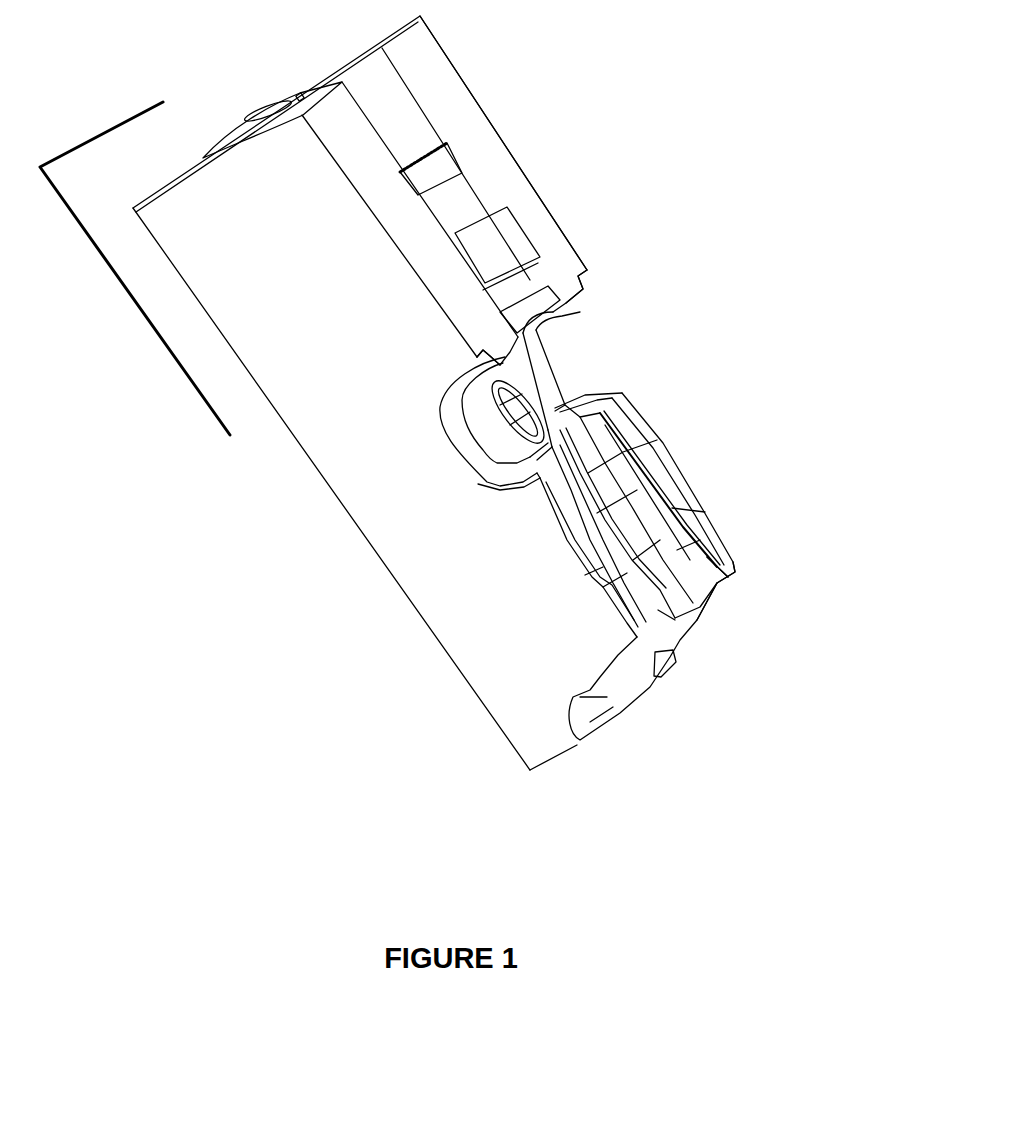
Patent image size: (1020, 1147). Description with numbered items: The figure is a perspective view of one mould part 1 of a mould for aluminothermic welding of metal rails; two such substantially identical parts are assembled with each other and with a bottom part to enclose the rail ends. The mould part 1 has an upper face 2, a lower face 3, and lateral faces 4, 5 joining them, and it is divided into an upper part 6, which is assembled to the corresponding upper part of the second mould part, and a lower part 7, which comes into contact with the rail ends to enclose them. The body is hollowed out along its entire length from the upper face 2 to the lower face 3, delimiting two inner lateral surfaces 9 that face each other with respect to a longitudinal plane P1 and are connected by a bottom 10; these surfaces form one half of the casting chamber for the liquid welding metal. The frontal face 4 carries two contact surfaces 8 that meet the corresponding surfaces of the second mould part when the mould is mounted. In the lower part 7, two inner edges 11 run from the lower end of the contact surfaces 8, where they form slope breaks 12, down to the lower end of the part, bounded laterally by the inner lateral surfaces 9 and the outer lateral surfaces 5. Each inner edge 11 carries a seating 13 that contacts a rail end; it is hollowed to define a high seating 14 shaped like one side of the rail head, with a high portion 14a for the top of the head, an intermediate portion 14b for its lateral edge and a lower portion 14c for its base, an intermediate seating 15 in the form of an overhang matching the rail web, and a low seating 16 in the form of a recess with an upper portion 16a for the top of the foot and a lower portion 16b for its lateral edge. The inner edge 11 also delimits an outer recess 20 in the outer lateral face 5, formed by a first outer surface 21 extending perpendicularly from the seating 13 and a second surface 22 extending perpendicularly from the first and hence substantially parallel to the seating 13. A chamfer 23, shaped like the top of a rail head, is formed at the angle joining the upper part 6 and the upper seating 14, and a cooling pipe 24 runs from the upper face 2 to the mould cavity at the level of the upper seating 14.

The mould part 1 is at (160, 80).
The upper face 2 is at (302, 87).
The lower face 3 is at (575, 748).
The lateral face 4 is at (540, 200).
The lateral face 5 is at (302, 393).
The upper part 6 is at (507, 145).
The lower part 7 is at (682, 463).
The contact surface 8 is at (402, 233).
The inner lateral surface 9 is at (408, 118).
The bottom 10 is at (535, 367).
The inner edge 11 is at (654, 437).
The slope break 12 is at (585, 303).
The seating 13 is at (649, 508).
The high seating 14 is at (637, 381).
The high portion 14a is at (545, 335).
The intermediate portion 14b is at (558, 378).
The lower portion 14c is at (588, 397).
The intermediate seating 15 is at (687, 492).
The low seating 16 is at (792, 588).
The upper portion 16a is at (712, 602).
The lower portion 16b is at (672, 663).
The outer recess 20 is at (459, 451).
The first outer surface 21 is at (459, 451).
The second surface 22 is at (458, 460).
The chamfer 23 is at (562, 313).
The cooling pipe 24 is at (230, 135).
The longitudinal plane P1 is at (135, 268).